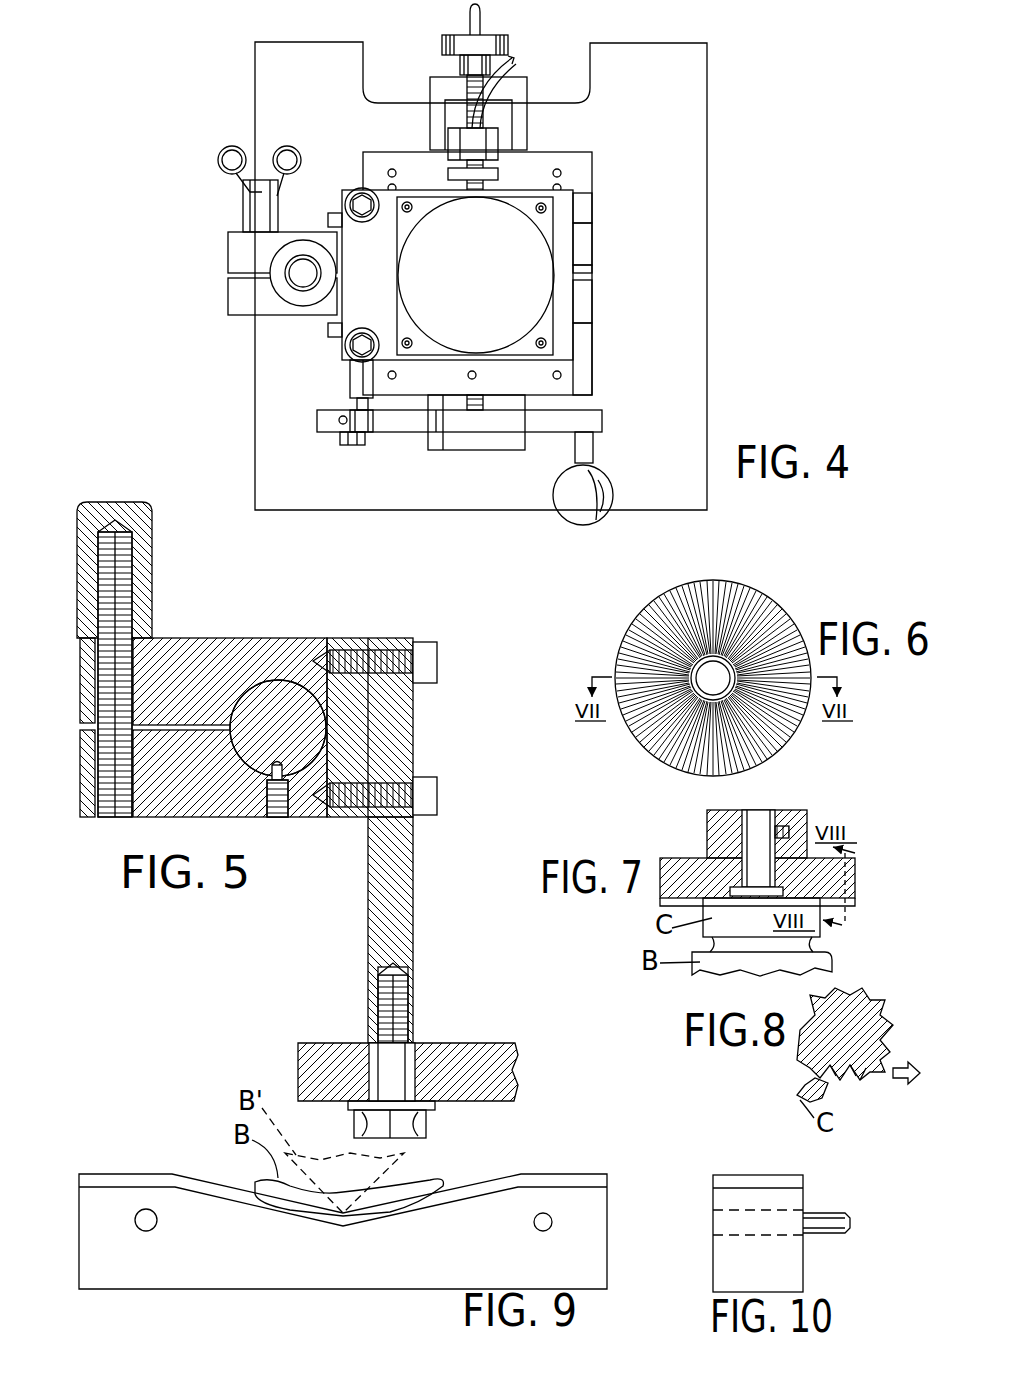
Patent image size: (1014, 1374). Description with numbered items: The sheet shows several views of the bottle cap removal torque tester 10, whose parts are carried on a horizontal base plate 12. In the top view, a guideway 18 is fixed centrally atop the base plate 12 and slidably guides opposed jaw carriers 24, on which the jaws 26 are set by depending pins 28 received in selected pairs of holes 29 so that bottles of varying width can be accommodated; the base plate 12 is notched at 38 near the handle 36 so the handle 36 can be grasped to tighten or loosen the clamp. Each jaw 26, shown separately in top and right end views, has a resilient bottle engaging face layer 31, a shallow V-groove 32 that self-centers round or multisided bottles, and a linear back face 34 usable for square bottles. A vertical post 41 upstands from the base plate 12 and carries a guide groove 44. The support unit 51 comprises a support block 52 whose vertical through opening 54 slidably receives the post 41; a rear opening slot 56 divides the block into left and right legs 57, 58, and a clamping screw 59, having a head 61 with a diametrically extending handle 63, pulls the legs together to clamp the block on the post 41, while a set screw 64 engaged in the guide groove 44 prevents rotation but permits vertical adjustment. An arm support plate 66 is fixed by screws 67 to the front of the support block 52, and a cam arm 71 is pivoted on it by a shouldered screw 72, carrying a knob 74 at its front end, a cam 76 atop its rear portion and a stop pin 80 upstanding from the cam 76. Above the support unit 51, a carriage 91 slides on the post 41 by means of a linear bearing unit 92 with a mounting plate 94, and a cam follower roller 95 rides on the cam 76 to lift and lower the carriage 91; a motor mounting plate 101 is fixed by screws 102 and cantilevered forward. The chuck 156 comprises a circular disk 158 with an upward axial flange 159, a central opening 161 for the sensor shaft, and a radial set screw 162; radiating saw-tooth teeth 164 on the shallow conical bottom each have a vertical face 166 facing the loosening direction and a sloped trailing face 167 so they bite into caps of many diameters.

In FIG. 4, the bottle cap removal torque tester 10 is at (716, 194).
In FIG. 4, the base plate 12 is at (697, 72).
In FIG. 4, the guideway 18 is at (492, 444).
In FIG. 4, the jaw carriers 24 is at (578, 200).
In FIG. 4, the jaws 26 is at (584, 247).
In FIG. 9, the jaws 26 is at (605, 1236).
In FIG. 10, the jaws 26 is at (720, 1263).
In FIG. 9, the depending pins 28 is at (534, 1225).
In FIG. 10, the depending pins 28 is at (830, 1218).
In FIG. 4, the holes 29 is at (562, 170).
In FIG. 4, the bottle engaging face layer 31 is at (593, 269).
In FIG. 9, the bottle engaging face layer 31 is at (115, 1178).
In FIG. 10, the bottle engaging face layer 31 is at (750, 1181).
In FIG. 9, the V-groove 32 is at (192, 1188).
In FIG. 9, the back faces 34 is at (194, 1290).
In FIG. 4, the handle 36 is at (456, 37).
In FIG. 4, the notch 38 is at (588, 60).
In FIG. 4, the post 41 is at (302, 284).
In FIG. 5, the post 41 is at (278, 690).
In FIG. 5, the guide groove 44 is at (264, 770).
In FIG. 4, the support unit 51 is at (225, 302).
In FIG. 5, the support unit 51 is at (80, 823).
In FIG. 4, the support block 52 is at (236, 253).
In FIG. 5, the support block 52 is at (172, 648).
In FIG. 5, the through opening 54 is at (250, 700).
In FIG. 5, the slot 56 is at (202, 725).
In FIG. 5, the left leg 57 is at (84, 771).
In FIG. 5, the right leg 58 is at (84, 682).
In FIG. 5, the clamping screw 59 is at (105, 800).
In FIG. 5, the head 61 is at (84, 518).
In FIG. 4, the handle 63 is at (222, 158).
In FIG. 5, the set screw 64 is at (277, 800).
In FIG. 4, the arm support plate 66 is at (347, 384).
In FIG. 5, the arm support plate 66 is at (408, 862).
In FIG. 5, the screws 67 is at (428, 666).
In FIG. 4, the cam arm 71 is at (598, 422).
In FIG. 5, the cam arm 71 is at (455, 1052).
In FIG. 4, the shouldered screw 72 is at (358, 446).
In FIG. 5, the shouldered screw 72 is at (426, 1126).
In FIG. 4, the knob 74 is at (596, 513).
In FIG. 4, the cam 76 is at (433, 437).
In FIG. 4, the stop pin 80 is at (340, 422).
In FIG. 4, the carriage 91 is at (594, 184).
In FIG. 4, the linear bearing unit 92 is at (284, 285).
In FIG. 4, the mounting plate 94 is at (338, 330).
In FIG. 4, the cam follower roller 95 is at (436, 414).
In FIG. 4, the motor mounting plate 101 is at (570, 216).
In FIG. 4, the screws 102 is at (360, 198).
In FIG. 6, the chuck 156 is at (633, 612).
In FIG. 8, the chuck 156 is at (886, 1034).
In FIG. 6, the circular disk 158 is at (621, 649).
In FIG. 7, the circular disk 158 is at (855, 884).
In FIG. 7, the axial flange 159 is at (715, 836).
In FIG. 7, the central opening 161 is at (745, 820).
In FIG. 7, the set screw 162 is at (770, 830).
In FIG. 7, the teeth 164 is at (855, 906).
In FIG. 8, the teeth 164 is at (890, 1061).
In FIG. 8, the vertical face 166 is at (868, 1073).
In FIG. 8, the sloped trailing face 167 is at (852, 1076).